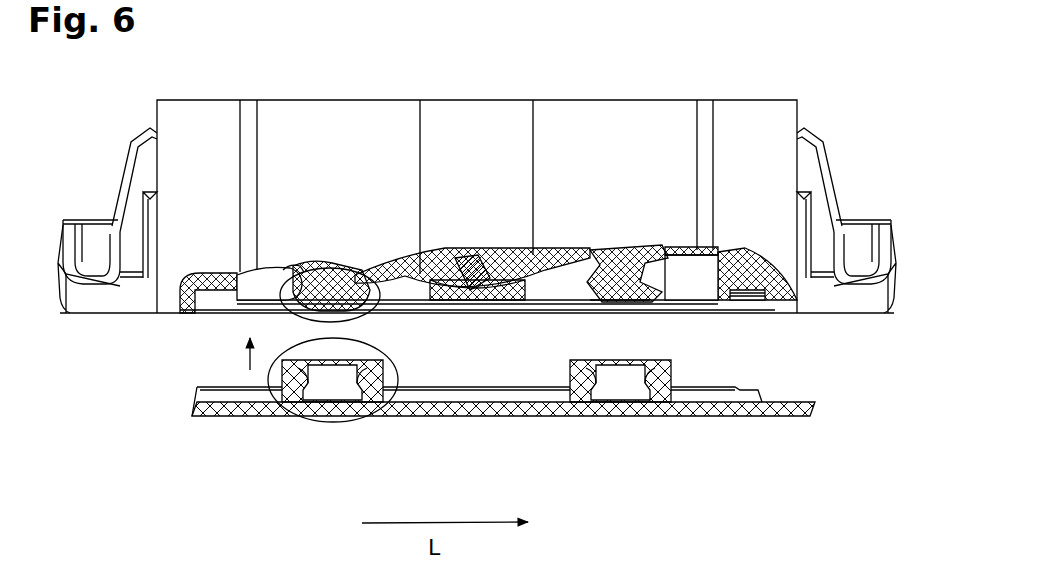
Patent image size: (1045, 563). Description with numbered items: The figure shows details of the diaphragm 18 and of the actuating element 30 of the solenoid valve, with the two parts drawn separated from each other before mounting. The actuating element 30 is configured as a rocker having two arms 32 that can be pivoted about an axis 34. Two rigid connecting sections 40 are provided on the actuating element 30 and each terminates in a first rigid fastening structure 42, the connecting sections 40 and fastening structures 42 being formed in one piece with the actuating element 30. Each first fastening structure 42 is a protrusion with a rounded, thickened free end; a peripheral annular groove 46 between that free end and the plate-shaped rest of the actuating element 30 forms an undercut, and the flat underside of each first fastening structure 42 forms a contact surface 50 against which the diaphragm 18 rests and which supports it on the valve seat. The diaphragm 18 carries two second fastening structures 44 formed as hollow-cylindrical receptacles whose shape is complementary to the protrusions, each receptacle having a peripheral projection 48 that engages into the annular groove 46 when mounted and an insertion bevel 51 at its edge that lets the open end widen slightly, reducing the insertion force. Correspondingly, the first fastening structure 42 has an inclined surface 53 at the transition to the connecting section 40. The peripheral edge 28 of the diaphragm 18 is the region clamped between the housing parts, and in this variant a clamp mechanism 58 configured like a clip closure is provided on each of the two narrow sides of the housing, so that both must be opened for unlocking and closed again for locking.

The diaphragm 18 is at (550, 423).
The peripheral edge 28 is at (783, 417).
The actuating element 30 is at (479, 238).
The arm 32 is at (377, 275).
The axis 34 is at (455, 247).
The connecting section 40 is at (330, 268).
The first fastening structure 42 is at (368, 308).
The second fastening structure 44 is at (367, 410).
The annular groove 46 is at (432, 294).
The projection 48 is at (362, 405).
The contact surface 50 is at (618, 288).
The insertion bevel 51 is at (283, 418).
The inclined surface 53 is at (297, 273).
The clamp mechanism 58 is at (98, 162).